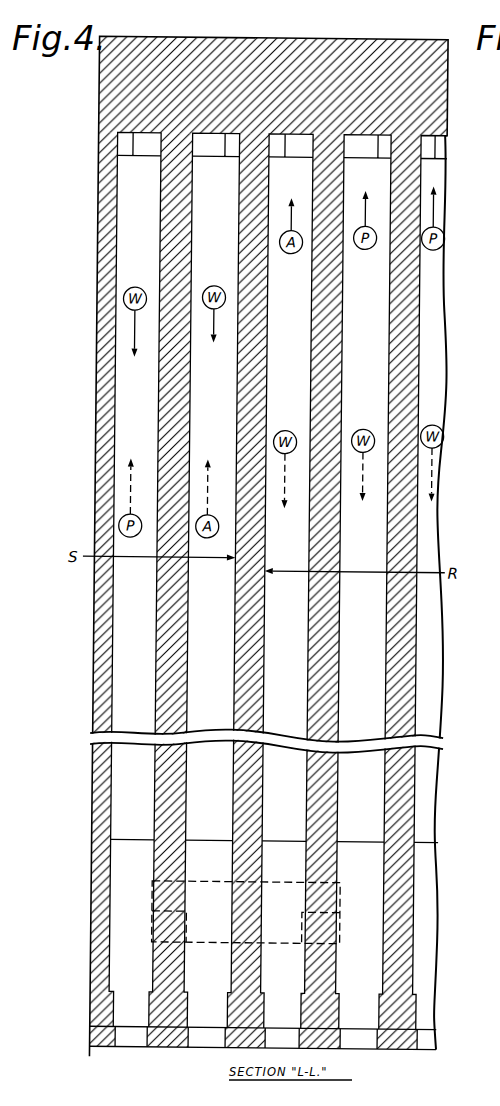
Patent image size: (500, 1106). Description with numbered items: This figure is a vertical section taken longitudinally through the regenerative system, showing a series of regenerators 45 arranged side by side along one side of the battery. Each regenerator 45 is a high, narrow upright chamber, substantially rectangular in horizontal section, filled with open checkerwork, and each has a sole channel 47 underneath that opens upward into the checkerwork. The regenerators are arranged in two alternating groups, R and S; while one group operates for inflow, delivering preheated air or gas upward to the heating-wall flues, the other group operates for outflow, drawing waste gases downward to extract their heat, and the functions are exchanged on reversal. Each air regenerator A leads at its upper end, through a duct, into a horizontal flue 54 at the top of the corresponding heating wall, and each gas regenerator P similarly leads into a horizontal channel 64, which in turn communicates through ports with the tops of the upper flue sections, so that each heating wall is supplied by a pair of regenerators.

The regenerator 45 is at (290, 580).
The sole channel 47 is at (266, 1028).
The horizontal flue 54 is at (294, 143).
The horizontal channel 64 is at (428, 148).